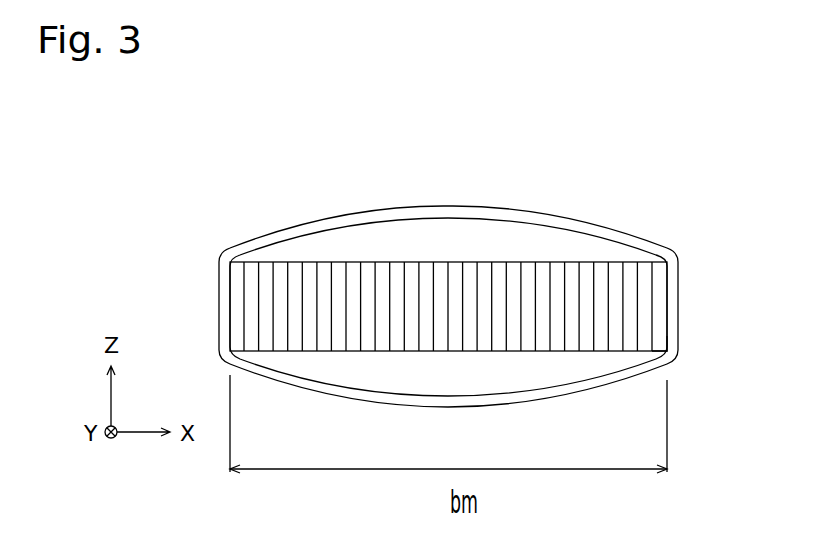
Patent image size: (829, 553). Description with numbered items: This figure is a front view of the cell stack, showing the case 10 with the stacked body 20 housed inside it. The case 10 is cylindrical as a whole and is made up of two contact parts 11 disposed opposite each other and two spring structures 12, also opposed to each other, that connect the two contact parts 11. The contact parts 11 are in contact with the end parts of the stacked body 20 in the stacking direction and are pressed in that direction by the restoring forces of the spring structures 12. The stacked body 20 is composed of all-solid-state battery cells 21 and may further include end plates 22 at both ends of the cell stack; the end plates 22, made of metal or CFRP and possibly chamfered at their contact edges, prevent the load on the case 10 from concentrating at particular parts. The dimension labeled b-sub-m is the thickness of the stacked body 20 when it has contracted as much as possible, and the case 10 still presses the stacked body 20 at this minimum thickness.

The case 10 is at (215, 290).
The contact part 11 is at (683, 260).
The spring structure 12 is at (668, 177).
The stacked body 20 is at (352, 353).
The all-solid-state battery cell 21 is at (557, 338).
The end plate 22 is at (660, 348).